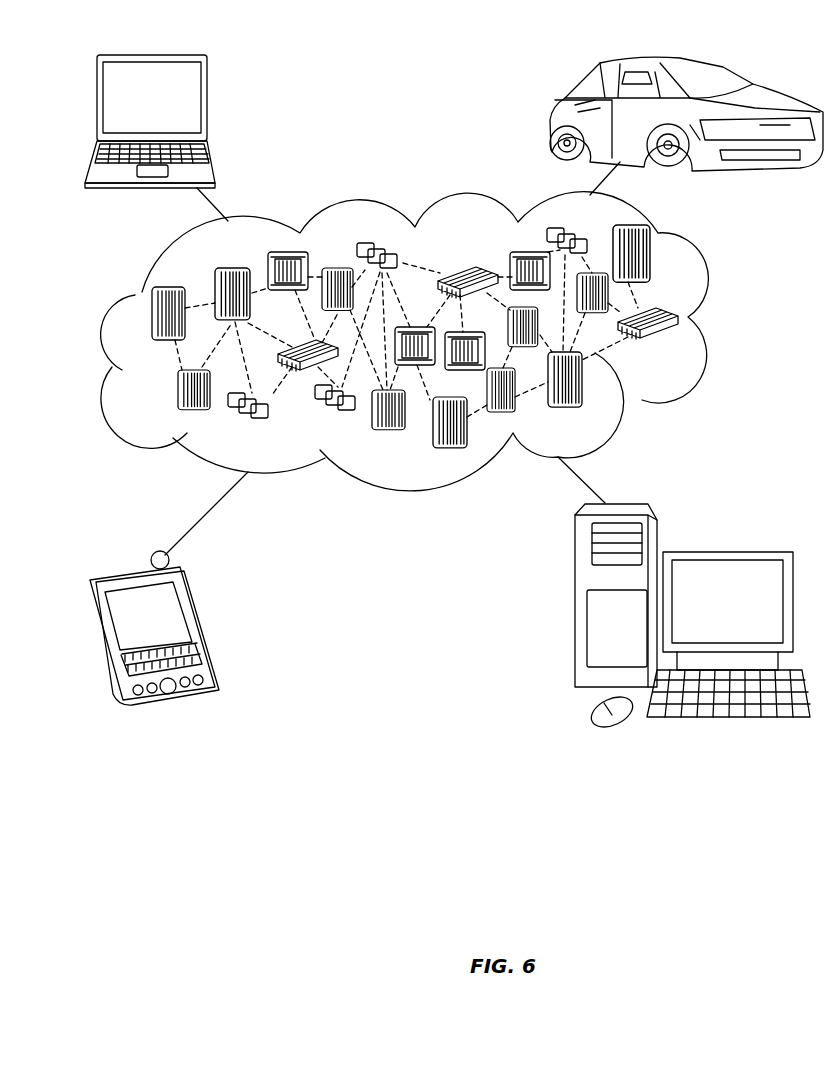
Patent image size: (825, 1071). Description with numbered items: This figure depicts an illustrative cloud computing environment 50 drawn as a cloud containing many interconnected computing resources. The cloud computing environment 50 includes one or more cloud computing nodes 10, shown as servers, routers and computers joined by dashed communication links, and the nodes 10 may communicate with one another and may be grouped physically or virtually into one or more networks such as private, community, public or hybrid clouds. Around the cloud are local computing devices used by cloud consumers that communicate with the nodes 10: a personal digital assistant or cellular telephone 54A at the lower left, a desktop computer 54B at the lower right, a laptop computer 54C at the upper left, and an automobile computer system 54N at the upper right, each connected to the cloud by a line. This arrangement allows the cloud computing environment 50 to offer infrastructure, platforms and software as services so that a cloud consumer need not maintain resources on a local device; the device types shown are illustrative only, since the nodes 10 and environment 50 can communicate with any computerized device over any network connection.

The laptop computer 54C is at (207, 105).
The automobile computer system 54N is at (550, 115).
The personal digital assistant or cellular telephone 54A is at (197, 625).
The desktop computer 54B is at (725, 550).
The cloud computing environment 50 is at (728, 322).
The cloud computing node 10 is at (686, 352).